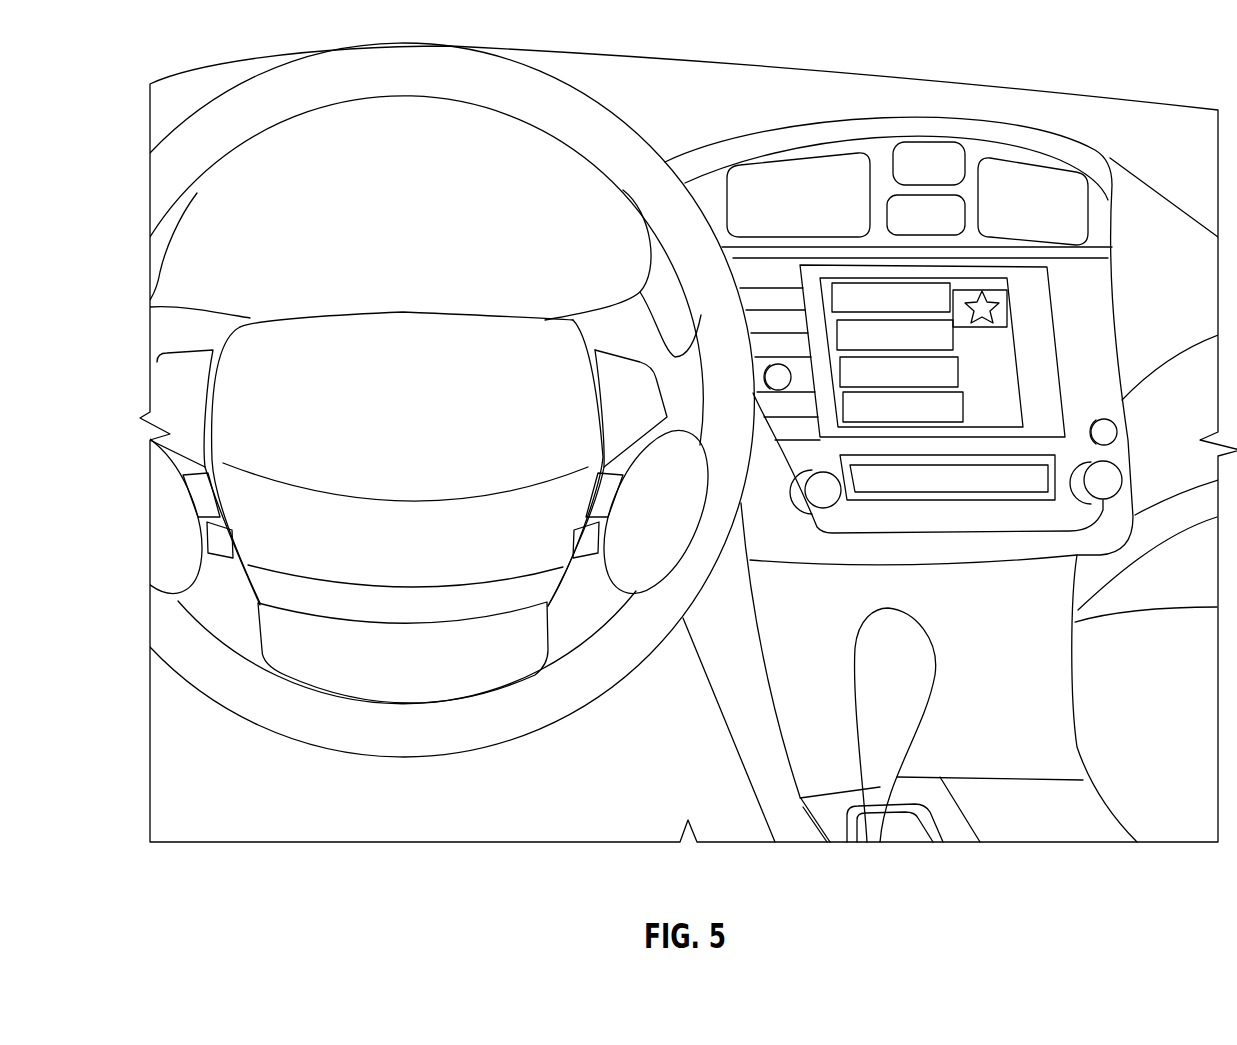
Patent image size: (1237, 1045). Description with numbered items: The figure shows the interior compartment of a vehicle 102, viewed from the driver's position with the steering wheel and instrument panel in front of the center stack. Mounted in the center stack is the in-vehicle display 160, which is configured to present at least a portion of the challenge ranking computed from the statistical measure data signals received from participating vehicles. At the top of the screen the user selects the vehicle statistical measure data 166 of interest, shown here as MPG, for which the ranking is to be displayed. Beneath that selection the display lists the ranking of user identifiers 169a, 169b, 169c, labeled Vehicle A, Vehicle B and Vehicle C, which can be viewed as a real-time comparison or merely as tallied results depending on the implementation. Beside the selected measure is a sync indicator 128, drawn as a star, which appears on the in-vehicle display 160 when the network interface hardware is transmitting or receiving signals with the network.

The vehicle 102 is at (173, 62).
The in-vehicle display 160 is at (1028, 264).
The vehicle statistical measure data 166 is at (858, 282).
The sync indicator 128 is at (985, 290).
The user identifier 169a is at (957, 335).
The user identifier 169b is at (960, 372).
The user identifier 169c is at (907, 422).